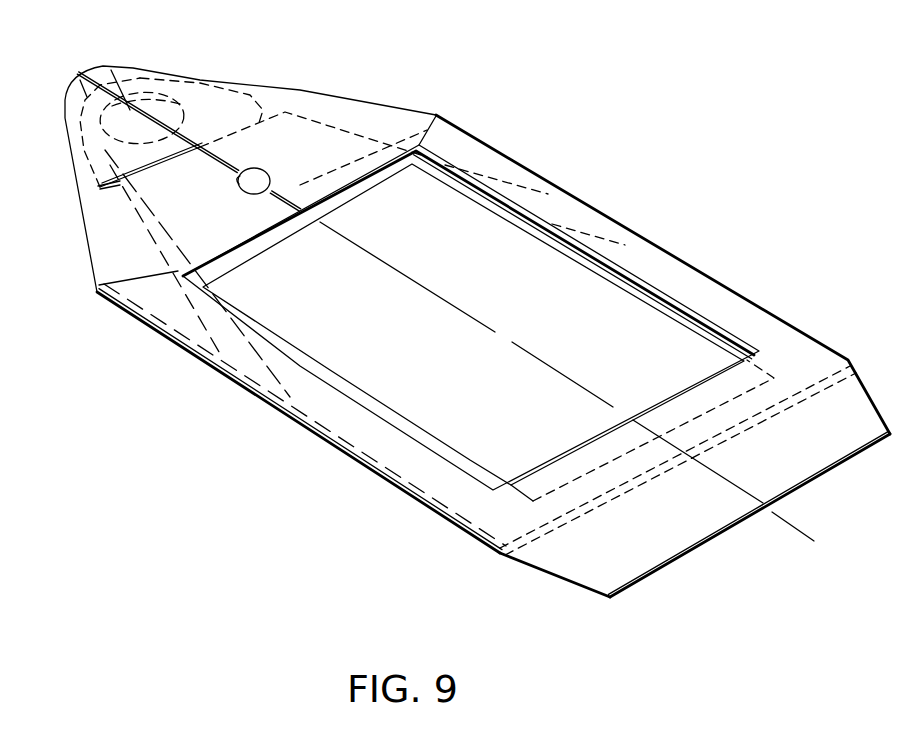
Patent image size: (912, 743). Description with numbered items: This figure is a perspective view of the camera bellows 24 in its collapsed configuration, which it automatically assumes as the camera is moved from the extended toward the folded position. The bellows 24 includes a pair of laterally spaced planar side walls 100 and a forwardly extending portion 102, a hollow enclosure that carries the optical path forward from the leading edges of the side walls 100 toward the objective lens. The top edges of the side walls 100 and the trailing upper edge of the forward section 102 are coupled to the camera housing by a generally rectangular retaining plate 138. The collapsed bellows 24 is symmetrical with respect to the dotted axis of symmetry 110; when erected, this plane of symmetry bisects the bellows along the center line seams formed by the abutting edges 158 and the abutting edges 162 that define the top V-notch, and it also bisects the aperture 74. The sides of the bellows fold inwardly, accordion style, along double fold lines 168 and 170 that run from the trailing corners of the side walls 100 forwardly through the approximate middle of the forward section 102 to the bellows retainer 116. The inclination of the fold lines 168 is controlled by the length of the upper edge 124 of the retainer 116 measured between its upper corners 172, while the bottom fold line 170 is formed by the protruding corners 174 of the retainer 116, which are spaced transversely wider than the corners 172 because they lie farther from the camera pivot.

The bellows 24 is at (283, 425).
The aperture 74 is at (268, 178).
The side walls 100 is at (437, 182).
The forwardly extending portion 102 is at (302, 78).
The axis of symmetry 110 is at (378, 260).
The retainer 116 is at (157, 153).
The upper edge 124 is at (107, 66).
The retaining plate 138 is at (695, 287).
The outermost edge 158 is at (723, 480).
The edges 162 is at (283, 198).
The fold lines 168 is at (164, 219).
The bottom fold line 170 is at (157, 250).
The upper corners 172 is at (80, 80).
The protruding corners 174 is at (194, 78).